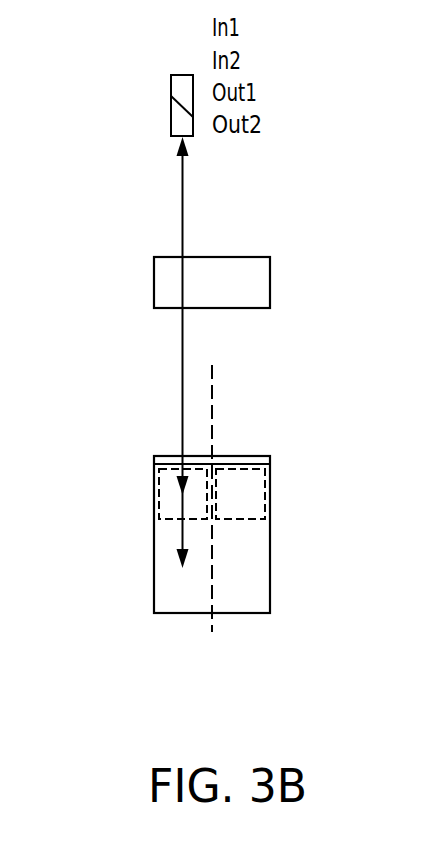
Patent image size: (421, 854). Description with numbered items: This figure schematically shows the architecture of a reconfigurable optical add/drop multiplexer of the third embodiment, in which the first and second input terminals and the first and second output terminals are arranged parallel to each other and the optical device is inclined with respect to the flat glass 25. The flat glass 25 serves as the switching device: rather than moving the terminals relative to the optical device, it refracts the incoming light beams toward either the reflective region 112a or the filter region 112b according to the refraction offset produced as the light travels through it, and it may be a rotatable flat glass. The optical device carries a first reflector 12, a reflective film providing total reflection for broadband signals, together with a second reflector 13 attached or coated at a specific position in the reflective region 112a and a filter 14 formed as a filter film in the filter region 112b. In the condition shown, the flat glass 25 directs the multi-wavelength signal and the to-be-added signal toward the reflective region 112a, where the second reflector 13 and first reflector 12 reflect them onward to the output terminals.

The first reflector 12 is at (260, 572).
The second reflector 13 is at (160, 493).
The filter 14 is at (263, 493).
The flat glass 25 is at (260, 282).
The reflective region 112a is at (165, 352).
The filter region 112b is at (237, 498).